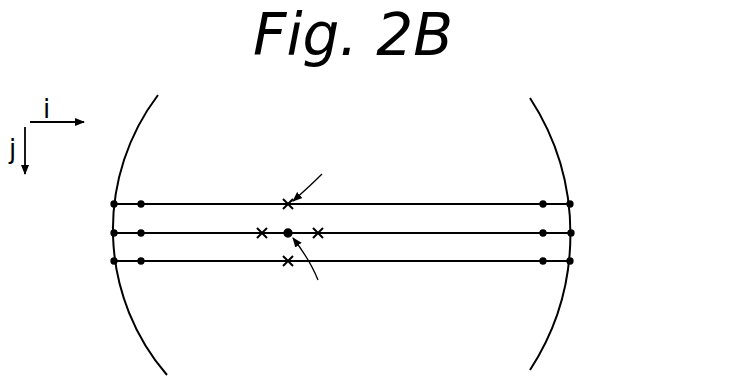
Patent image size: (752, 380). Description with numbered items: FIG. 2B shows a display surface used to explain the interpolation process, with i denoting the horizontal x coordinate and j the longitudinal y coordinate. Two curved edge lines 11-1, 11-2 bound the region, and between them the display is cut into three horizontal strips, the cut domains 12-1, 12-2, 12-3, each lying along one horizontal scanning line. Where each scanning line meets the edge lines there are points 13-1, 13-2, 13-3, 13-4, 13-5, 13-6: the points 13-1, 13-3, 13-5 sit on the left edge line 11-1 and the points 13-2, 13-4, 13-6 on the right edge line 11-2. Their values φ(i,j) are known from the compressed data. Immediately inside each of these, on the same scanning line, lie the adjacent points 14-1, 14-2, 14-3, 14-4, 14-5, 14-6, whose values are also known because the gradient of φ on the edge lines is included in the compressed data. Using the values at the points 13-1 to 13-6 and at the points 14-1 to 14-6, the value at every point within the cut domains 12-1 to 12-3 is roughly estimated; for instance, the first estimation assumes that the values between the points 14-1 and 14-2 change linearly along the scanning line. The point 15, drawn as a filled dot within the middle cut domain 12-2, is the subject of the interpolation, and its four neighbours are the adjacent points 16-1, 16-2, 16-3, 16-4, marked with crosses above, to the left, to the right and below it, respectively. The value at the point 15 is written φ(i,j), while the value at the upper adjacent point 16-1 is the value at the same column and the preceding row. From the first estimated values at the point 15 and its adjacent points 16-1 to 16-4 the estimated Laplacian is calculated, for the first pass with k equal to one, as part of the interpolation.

The edge line 11-1 is at (131, 318).
The edge line 11-2 is at (558, 155).
The cut domain 12-1 is at (425, 204).
The cut domain 12-2 is at (416, 233).
The cut domain 12-3 is at (416, 261).
The point on the edge line 13-1 is at (114, 204).
The point on the edge line 13-2 is at (570, 204).
The point on the edge line 13-3 is at (114, 233).
The point on the edge line 13-4 is at (571, 233).
The point on the edge line 13-5 is at (114, 261).
The point on the edge line 13-6 is at (570, 261).
The adjacent point 14-1 is at (141, 204).
The adjacent point 14-2 is at (543, 204).
The adjacent point 14-3 is at (141, 233).
The adjacent point 14-4 is at (543, 233).
The adjacent point 14-5 is at (141, 261).
The adjacent point 14-6 is at (543, 261).
The point within the cut domain 15 is at (287, 237).
The adjacent point 16-1 is at (288, 200).
The adjacent point 16-2 is at (262, 229).
The adjacent point 16-3 is at (322, 232).
The adjacent point 16-4 is at (288, 268).